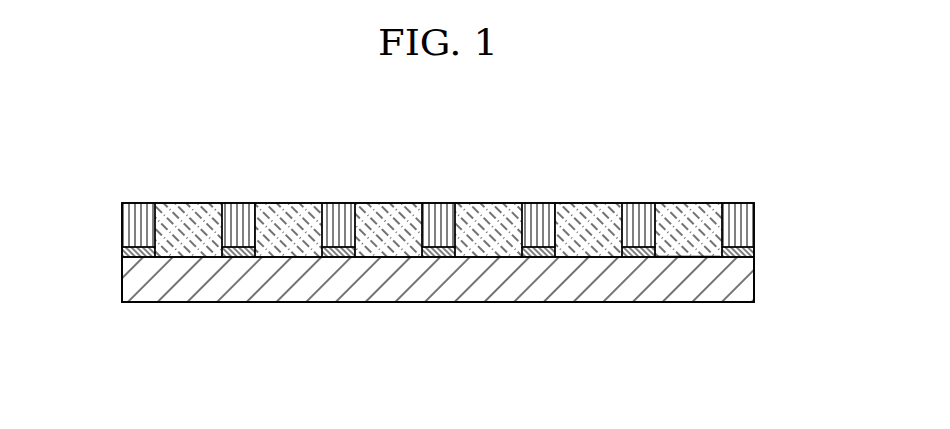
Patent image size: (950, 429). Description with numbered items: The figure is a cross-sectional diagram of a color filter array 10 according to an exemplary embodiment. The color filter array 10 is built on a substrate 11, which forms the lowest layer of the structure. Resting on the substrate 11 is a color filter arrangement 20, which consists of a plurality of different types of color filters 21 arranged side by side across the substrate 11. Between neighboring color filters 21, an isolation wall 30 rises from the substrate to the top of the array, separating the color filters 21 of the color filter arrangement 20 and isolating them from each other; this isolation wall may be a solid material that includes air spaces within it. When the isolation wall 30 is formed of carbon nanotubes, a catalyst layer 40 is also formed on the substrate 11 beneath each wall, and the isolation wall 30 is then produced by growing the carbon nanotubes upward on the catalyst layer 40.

The color filter array 10 is at (438, 258).
The substrate 11 is at (745, 282).
The color filter arrangement 20 is at (702, 192).
The color filters 21 is at (688, 252).
The isolation wall 30 is at (750, 225).
The catalyst layer 40 is at (750, 253).